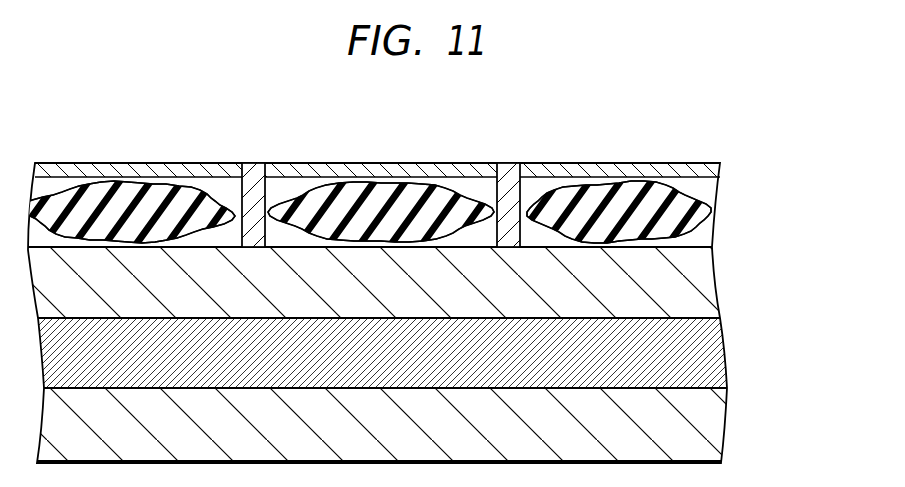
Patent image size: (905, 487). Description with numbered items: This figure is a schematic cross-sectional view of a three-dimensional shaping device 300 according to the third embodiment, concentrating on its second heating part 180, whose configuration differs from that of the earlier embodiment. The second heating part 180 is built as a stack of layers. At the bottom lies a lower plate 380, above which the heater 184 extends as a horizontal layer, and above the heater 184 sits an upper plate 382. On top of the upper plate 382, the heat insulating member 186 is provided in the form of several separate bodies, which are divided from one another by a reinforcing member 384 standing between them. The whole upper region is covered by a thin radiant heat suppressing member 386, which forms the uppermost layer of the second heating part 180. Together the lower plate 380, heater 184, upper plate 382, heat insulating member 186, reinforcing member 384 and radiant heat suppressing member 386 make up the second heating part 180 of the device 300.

The three-dimensional shaping device 300 is at (749, 97).
The second heating part 180 is at (701, 148).
The heat insulating member 186 is at (693, 210).
The upper plate 382 is at (690, 293).
The heater 184 is at (700, 355).
The lower plate 380 is at (695, 430).
The reinforcing member 384 is at (253, 165).
The radiant heat suppressing member 386 is at (337, 170).